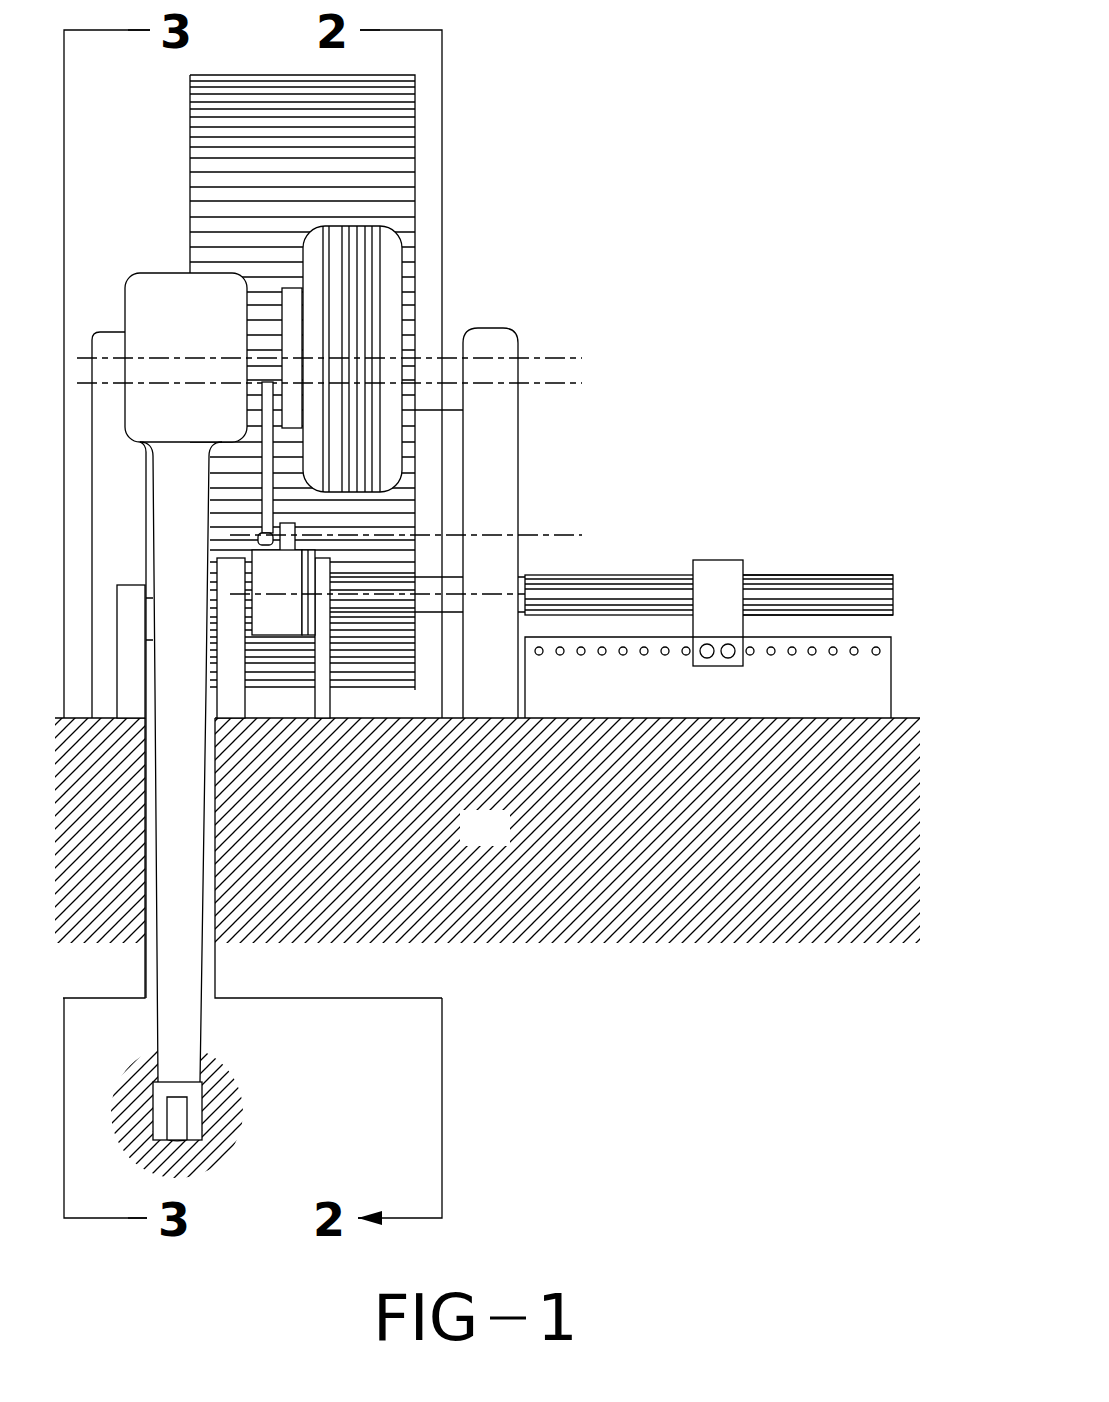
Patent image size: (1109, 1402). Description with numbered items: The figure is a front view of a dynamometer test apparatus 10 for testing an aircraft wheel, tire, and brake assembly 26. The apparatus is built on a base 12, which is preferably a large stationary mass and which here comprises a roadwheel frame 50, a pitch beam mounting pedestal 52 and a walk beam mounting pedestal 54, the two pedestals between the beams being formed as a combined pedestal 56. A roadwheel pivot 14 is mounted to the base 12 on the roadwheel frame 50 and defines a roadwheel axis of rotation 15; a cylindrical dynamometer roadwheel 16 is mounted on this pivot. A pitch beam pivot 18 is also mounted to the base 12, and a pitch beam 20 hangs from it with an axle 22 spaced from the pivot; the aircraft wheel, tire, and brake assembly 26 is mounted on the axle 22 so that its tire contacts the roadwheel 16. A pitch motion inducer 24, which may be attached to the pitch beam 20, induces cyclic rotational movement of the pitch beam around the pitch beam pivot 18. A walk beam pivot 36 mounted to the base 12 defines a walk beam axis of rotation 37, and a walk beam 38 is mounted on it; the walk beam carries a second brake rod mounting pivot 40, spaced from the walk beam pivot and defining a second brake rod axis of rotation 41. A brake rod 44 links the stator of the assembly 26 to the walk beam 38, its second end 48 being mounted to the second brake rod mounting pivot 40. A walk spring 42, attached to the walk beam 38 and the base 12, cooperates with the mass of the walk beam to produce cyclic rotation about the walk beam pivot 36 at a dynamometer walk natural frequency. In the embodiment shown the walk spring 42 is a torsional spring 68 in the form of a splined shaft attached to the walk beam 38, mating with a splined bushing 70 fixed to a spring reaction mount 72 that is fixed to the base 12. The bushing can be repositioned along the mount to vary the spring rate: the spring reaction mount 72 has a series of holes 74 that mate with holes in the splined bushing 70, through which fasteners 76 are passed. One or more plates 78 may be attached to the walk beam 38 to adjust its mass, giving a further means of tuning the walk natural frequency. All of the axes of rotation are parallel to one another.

The dynamometer test apparatus 10 is at (585, 212).
The base 12 is at (502, 842).
The roadwheel pivot 14 is at (452, 400).
The roadwheel axis of rotation 15 is at (568, 383).
The dynamometer roadwheel 16 is at (195, 180).
The pitch beam pivot 18 is at (150, 617).
The pitch beam 20 is at (200, 660).
The axle 22 is at (260, 348).
The pitch motion inducer 24 is at (203, 1112).
The aircraft wheel, tire, and brake assembly 26 is at (367, 323).
The walk beam pivot 36 is at (500, 560).
The walk beam axis of rotation 37 is at (893, 594).
The walk beam 38 is at (294, 584).
The second brake rod mounting pivot 40 is at (260, 535).
The second brake rod axis of rotation 41 is at (582, 535).
The walk spring 42 is at (648, 558).
The brake rod 44 is at (263, 475).
The second end 48 is at (262, 545).
The roadwheel frame 50 is at (137, 500).
The pitch beam mounting pedestal 52 is at (132, 595).
The walk beam mounting pedestal 54 is at (325, 708).
The combined pedestal 56 is at (237, 708).
The torsional spring 68 is at (818, 573).
The splined bushing 70 is at (737, 568).
The spring reaction mount 72 is at (625, 700).
The holes 74 is at (792, 655).
The fasteners 76 is at (728, 658).
The plates 78 is at (310, 627).